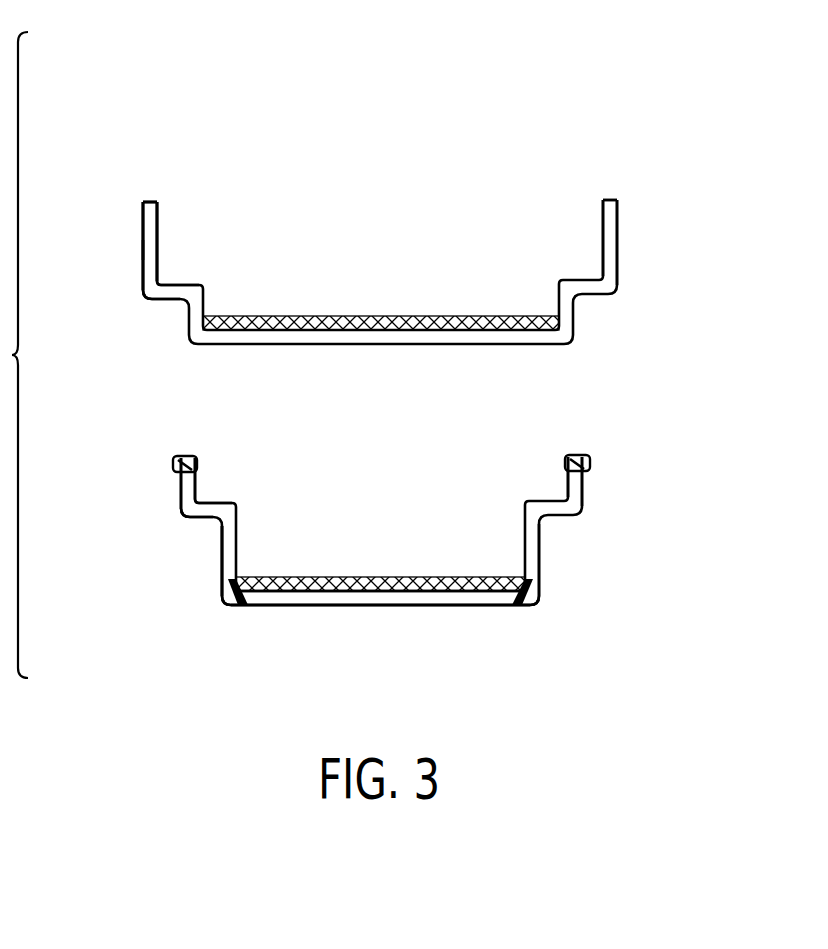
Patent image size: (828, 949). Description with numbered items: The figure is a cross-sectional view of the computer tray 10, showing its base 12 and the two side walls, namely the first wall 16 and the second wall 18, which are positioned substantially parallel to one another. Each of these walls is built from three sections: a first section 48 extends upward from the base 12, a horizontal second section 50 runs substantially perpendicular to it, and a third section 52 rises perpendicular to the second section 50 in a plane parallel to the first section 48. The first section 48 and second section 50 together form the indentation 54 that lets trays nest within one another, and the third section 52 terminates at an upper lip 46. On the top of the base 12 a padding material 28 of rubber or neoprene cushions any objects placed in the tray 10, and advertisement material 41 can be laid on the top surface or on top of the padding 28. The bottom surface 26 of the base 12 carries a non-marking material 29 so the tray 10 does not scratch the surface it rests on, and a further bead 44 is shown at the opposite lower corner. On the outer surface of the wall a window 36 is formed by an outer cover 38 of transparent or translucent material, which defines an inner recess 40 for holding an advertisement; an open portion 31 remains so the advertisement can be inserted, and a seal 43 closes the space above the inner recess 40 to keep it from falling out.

The tray 10 is at (384, 70).
The base 12 is at (478, 605).
The first wall 16 is at (142, 131).
The second wall 18 is at (618, 126).
The bottom surface 26 is at (460, 605).
The padding material 28 is at (432, 578).
The non-marking material 29 is at (228, 605).
The open portion 31 is at (160, 250).
The window 36 is at (148, 203).
The outer cover 38 is at (143, 230).
The inner recess 40 is at (143, 275).
The advertisement material 41 is at (495, 312).
The seal 43 is at (143, 265).
The sealant bead 44 is at (535, 598).
The upper lip 46 is at (585, 460).
The first section 48 is at (222, 568).
The second section 50 is at (185, 513).
The third section 52 is at (180, 485).
The indentation 54 is at (205, 518).